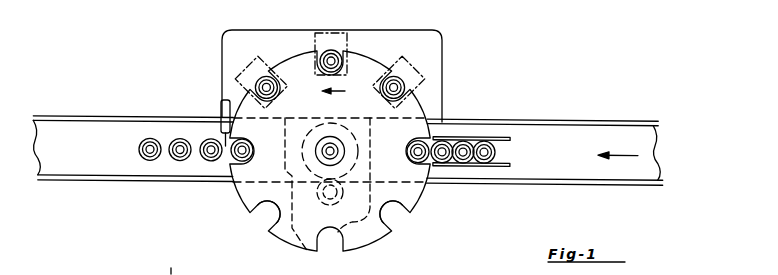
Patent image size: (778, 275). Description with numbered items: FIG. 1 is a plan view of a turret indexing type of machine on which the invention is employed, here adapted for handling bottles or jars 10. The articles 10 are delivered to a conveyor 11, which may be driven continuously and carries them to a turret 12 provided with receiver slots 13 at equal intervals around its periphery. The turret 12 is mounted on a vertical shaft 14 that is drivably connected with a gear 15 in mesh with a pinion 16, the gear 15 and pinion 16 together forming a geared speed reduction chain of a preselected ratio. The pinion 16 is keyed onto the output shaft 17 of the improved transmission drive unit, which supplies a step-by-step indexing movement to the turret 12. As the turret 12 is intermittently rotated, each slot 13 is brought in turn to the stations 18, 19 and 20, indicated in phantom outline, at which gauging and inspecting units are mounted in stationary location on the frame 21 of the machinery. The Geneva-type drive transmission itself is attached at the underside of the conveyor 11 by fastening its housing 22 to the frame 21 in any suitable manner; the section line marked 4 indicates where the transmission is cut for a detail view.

The section line 4- 4 is at (171, 262).
The bottles or jars 10 is at (181, 139).
The conveyor 11 is at (92, 151).
The turret 12 is at (417, 199).
The receiver slots 13 is at (270, 220).
The vertical shaft 14 is at (332, 139).
The gear 15 is at (358, 131).
The pinion 16 is at (343, 192).
The output shaft 17 is at (323, 194).
The station 18 is at (406, 81).
The station 19 is at (339, 51).
The station 20 is at (268, 75).
The frame 21 is at (440, 90).
The housing 22 is at (306, 252).